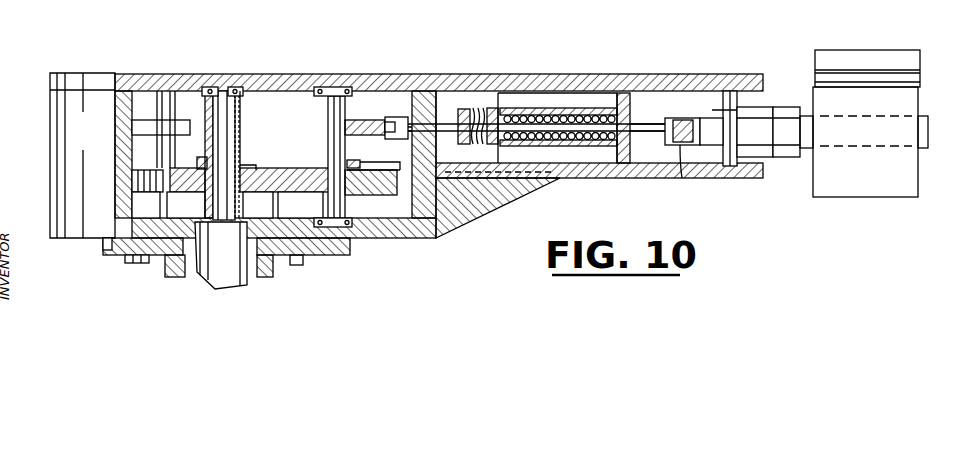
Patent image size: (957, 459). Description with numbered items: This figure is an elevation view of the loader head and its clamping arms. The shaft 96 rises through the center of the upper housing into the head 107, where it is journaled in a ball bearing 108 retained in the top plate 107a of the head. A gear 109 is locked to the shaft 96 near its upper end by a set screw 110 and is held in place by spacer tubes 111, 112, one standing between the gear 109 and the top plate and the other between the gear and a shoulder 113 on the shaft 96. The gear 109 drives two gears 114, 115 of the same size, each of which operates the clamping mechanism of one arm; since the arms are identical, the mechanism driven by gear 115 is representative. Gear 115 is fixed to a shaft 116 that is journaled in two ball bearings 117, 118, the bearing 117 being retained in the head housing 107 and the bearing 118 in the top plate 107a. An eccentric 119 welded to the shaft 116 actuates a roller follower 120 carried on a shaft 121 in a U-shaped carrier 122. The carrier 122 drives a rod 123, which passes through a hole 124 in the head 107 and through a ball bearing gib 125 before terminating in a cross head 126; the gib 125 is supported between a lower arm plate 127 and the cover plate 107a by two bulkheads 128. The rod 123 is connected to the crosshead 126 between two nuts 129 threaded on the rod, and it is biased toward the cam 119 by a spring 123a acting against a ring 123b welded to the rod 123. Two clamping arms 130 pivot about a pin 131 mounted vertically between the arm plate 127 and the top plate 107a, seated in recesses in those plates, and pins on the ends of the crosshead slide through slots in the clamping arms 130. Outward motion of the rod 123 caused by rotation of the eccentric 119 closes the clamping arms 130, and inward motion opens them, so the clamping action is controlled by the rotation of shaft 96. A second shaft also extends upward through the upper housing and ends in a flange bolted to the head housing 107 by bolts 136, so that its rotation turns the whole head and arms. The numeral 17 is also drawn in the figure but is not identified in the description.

The stop member 17 is at (388, 166).
The shaft 96 is at (210, 282).
The head 107 is at (398, 238).
The top plate 107a is at (262, 74).
The ball bearing 108 is at (212, 87).
The gear 109 is at (250, 168).
The set screw 110 is at (250, 166).
The spacer tube 111 is at (241, 126).
The spacer tube 112 is at (240, 203).
The shoulder 113 is at (262, 215).
The gear 114 is at (140, 135).
The gear 115 is at (355, 196).
The shaft 116 is at (347, 152).
The ball bearing 117 is at (342, 87).
The ball bearing 118 is at (350, 228).
The eccentric 119 is at (366, 114).
The roller follower 120 is at (392, 112).
The shaft 121 is at (404, 118).
The U-shaped carrier 122 is at (412, 110).
The rod 123 is at (447, 132).
The spring 123a is at (487, 112).
The ring 123b is at (467, 112).
The hole 124 is at (540, 155).
The ball bearing gib 125 is at (548, 148).
The cross head 126 is at (688, 118).
The lower arm plate 127 is at (478, 207).
The bulkhead 128 is at (527, 91).
The nut 129 is at (680, 178).
The clamping arm 130 is at (785, 107).
The pin 131 is at (728, 91).
The bolt 136 is at (132, 265).